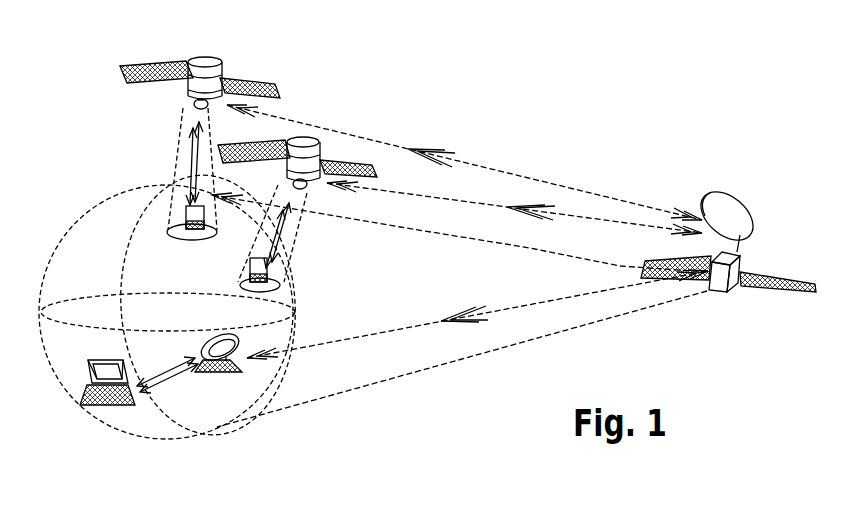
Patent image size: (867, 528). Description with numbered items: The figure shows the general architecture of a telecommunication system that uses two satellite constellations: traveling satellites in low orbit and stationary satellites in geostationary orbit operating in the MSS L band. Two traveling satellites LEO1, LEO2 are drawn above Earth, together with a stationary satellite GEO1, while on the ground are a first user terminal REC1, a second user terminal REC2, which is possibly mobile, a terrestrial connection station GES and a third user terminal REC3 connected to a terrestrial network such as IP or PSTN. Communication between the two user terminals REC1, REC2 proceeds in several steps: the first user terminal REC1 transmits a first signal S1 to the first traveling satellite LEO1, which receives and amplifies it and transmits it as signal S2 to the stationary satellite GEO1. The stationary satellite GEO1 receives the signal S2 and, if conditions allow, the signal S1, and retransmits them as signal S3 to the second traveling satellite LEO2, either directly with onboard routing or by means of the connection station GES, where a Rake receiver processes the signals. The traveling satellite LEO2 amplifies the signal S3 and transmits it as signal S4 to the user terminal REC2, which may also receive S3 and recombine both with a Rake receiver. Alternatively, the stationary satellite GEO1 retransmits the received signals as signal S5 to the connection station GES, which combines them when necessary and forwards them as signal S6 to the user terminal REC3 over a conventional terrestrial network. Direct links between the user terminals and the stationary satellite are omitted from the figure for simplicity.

The first traveling satellite LEO1 is at (200, 60).
The second traveling satellite LEO2 is at (313, 140).
The stationary satellite GEO1 is at (738, 205).
The first user terminal REC1 is at (172, 222).
The second user terminal REC2 is at (267, 270).
The user terminal connected to a terrestrial network REC3 is at (110, 405).
The terrestrial connection station GES is at (222, 372).
The first signal S1 is at (184, 145).
The second signal S2 is at (508, 167).
The third signal S3 is at (430, 200).
The fourth signal S4 is at (297, 242).
The fifth signal S5 is at (410, 330).
The sixth signal S6 is at (163, 373).